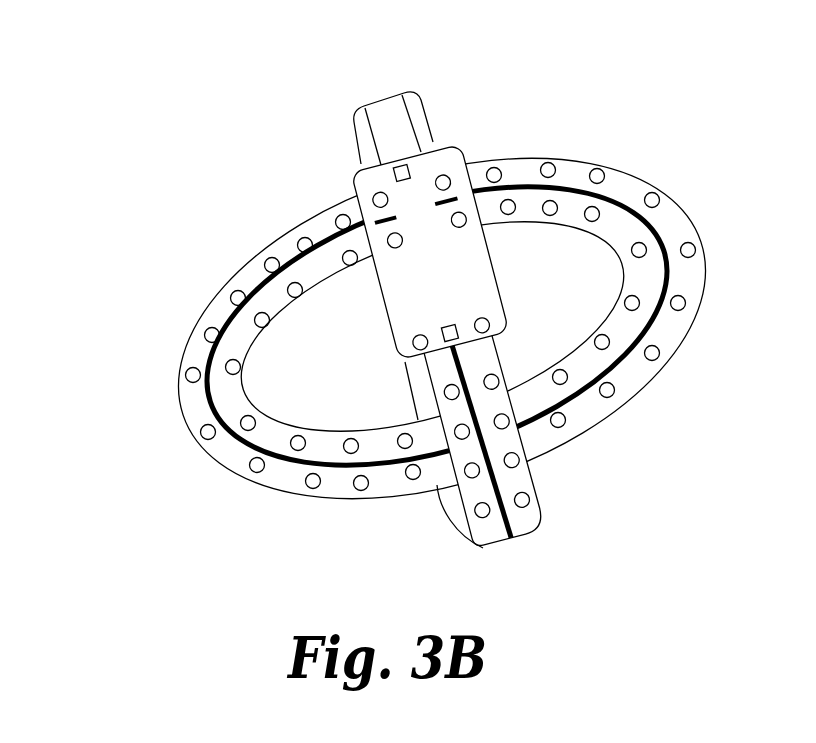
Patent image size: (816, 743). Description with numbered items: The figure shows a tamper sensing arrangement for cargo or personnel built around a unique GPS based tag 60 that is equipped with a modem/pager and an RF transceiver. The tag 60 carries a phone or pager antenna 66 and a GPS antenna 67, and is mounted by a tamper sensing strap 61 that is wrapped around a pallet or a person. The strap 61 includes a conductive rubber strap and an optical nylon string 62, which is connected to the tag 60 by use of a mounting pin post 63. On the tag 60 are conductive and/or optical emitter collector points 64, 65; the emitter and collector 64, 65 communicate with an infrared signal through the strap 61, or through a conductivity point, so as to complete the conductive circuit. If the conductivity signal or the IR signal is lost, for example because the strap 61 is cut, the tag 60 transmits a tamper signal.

The GPS based tag 60 is at (132, 235).
The tamper sensing strap 61 is at (612, 413).
The optical nylon string 62 is at (657, 230).
The mounting pin post 63 is at (389, 249).
The conductive and/or optical emitter collector point 64 is at (458, 197).
The conductive and/or optical emitter collector point 65 is at (377, 219).
The phone or pager antenna 66 is at (355, 125).
The GPS antenna 67 is at (422, 125).